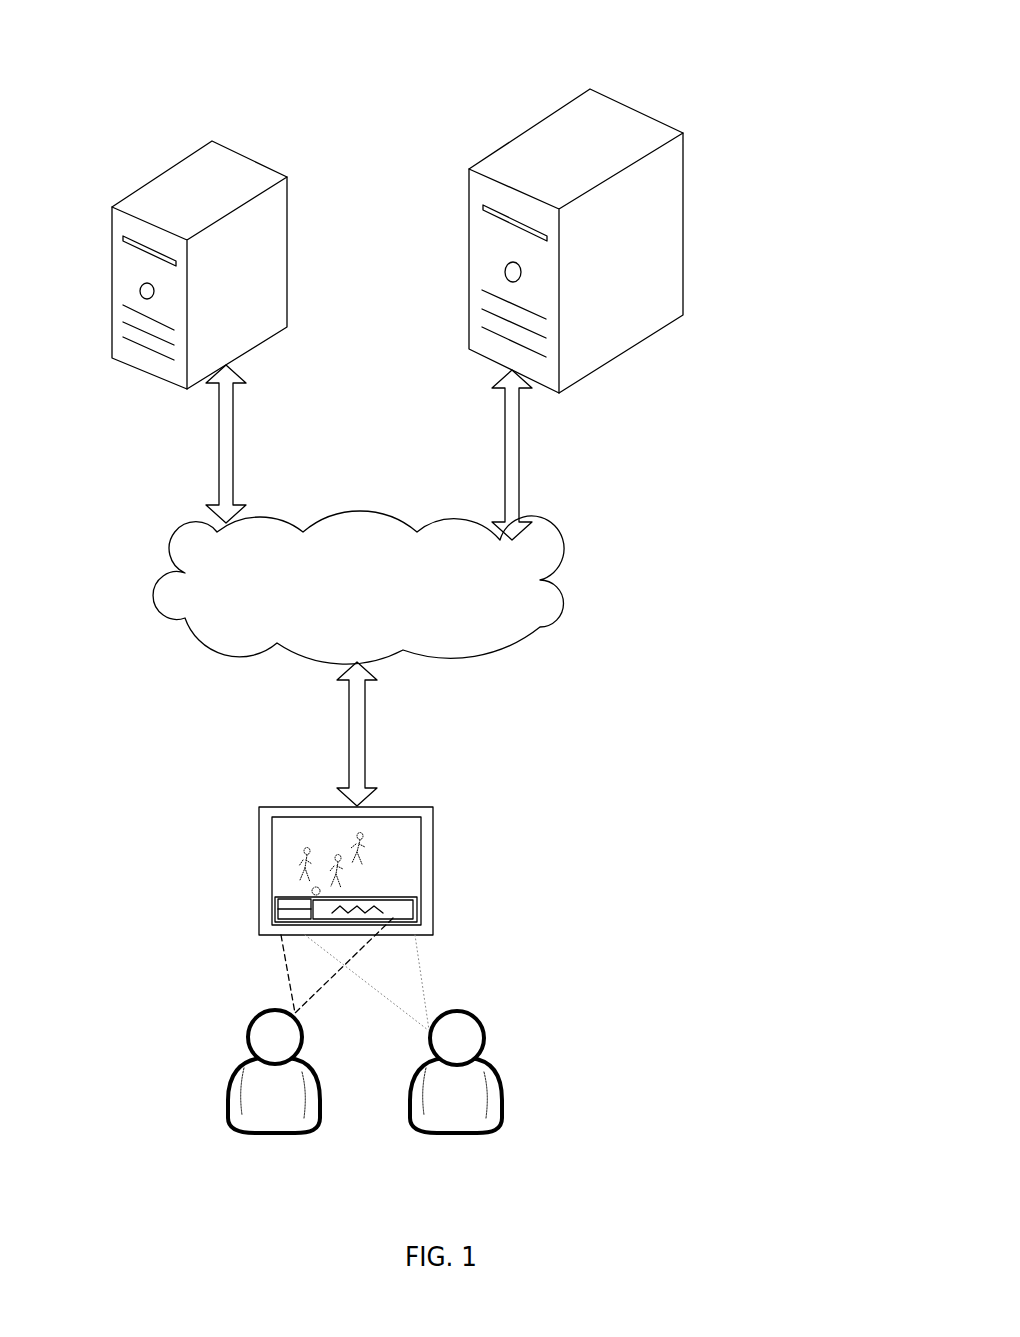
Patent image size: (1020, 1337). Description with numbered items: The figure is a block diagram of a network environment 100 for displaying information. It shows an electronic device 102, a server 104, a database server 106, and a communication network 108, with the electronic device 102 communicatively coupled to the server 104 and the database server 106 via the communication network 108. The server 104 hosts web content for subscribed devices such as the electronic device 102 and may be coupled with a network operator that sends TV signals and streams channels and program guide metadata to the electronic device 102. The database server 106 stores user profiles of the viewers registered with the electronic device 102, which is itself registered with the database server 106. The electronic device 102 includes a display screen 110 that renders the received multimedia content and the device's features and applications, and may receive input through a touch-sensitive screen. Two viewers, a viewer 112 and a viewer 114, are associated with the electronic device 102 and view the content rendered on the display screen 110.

The network environment 100 is at (660, 88).
The electronic device 102 is at (433, 830).
The server 104 is at (287, 262).
The database server 106 is at (683, 262).
The communication network 108 is at (506, 597).
The display screen 110 is at (417, 913).
The viewer 112 is at (310, 1128).
The viewer 114 is at (495, 1125).